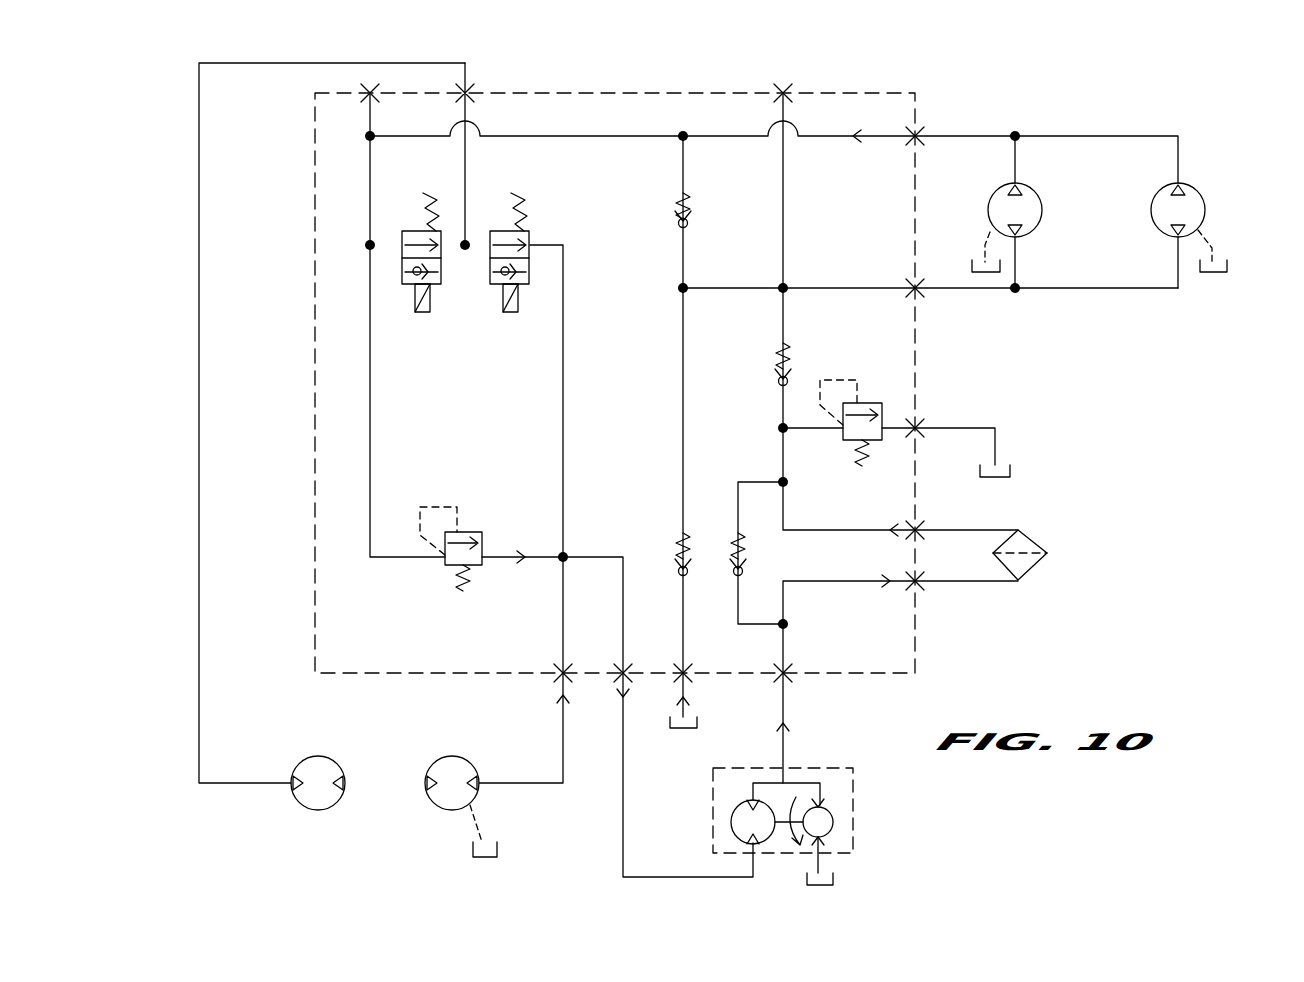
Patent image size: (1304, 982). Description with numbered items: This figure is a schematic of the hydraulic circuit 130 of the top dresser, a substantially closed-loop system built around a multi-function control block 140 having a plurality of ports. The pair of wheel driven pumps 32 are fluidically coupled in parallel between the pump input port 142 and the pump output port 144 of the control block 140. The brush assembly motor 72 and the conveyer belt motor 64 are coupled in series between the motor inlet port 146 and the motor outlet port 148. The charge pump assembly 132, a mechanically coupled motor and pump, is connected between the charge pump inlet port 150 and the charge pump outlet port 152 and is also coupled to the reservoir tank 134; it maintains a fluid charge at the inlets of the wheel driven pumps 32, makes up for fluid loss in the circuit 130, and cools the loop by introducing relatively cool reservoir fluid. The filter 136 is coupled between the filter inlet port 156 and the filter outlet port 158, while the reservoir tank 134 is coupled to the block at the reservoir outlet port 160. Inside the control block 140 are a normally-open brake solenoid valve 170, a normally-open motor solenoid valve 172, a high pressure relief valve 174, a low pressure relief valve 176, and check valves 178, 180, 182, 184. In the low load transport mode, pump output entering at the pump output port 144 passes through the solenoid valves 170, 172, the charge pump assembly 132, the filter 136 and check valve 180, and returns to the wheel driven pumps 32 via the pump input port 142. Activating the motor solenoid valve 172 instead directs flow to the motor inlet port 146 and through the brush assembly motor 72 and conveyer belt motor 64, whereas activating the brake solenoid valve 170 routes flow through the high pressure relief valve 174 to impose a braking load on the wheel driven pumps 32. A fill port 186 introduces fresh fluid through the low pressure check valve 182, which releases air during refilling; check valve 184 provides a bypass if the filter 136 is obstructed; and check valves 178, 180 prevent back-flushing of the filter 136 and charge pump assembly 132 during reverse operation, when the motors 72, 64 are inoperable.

The hydraulic circuit 130 is at (1022, 95).
The charge pump assembly 132 is at (853, 795).
The reservoir tank 134 is at (972, 268).
The filter 136 is at (1035, 567).
The multi-function control block 140 is at (918, 643).
The pump input port 142 is at (918, 291).
The pump output port 144 is at (913, 140).
The motor inlet port 146 is at (470, 93).
The motor outlet port 148 is at (560, 670).
The charge pump inlet port 150 is at (620, 672).
The charge pump outlet port 152 is at (788, 673).
The filter inlet port 156 is at (918, 583).
The filter outlet port 158 is at (918, 530).
The reservoir outlet port 160 is at (918, 428).
The brake solenoid valve 170 is at (441, 284).
The motor solenoid valve 172 is at (490, 284).
The high pressure relief valve 174 is at (470, 532).
The low pressure relief valve 176 is at (868, 403).
The check valve 178 is at (680, 200).
The check valve 180 is at (780, 355).
The low pressure check valve 182 is at (681, 545).
The check valve 184 is at (742, 546).
The fill port 186 is at (688, 673).
The wheel driven pumps 32 is at (1040, 196).
The conveyer belt motor 64 is at (447, 808).
The brush assembly motor 72 is at (303, 808).